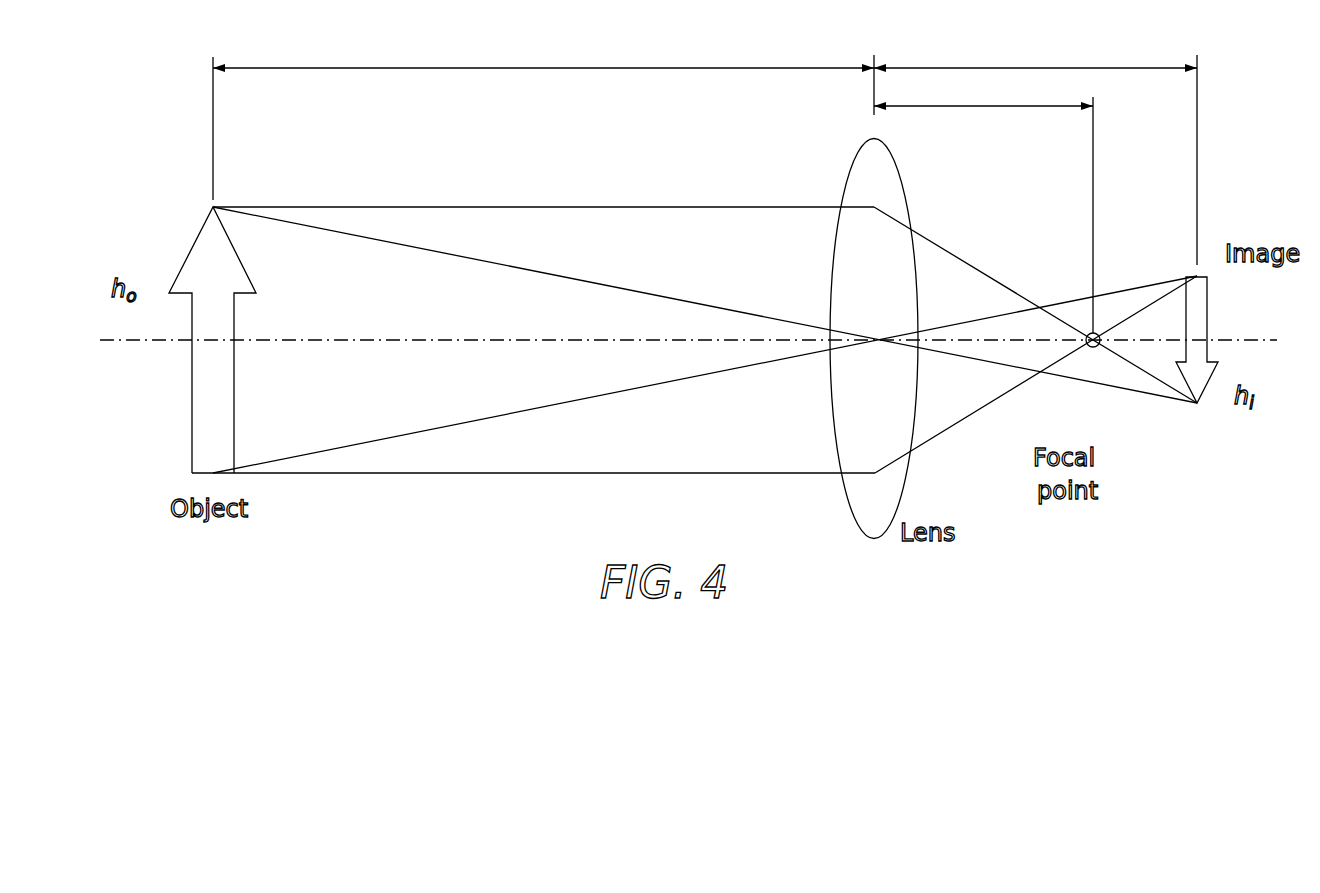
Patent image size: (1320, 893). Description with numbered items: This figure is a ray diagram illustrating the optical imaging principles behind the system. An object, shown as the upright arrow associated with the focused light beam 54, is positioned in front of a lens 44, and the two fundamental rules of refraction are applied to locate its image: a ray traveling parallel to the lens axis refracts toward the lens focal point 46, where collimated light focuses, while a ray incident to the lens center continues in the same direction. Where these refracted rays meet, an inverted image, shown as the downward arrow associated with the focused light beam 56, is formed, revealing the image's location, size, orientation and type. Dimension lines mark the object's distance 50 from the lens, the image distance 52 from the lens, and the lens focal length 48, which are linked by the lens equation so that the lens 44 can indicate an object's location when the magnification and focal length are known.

The lens 44 is at (846, 498).
The lens focal point 46 is at (1093, 347).
The lens focal length 48 is at (996, 108).
The object's distance from the lens 50 is at (559, 68).
The image distance from the lens 52 is at (991, 68).
The focused light beam 54 is at (192, 373).
The focused light beam 56 is at (1208, 308).